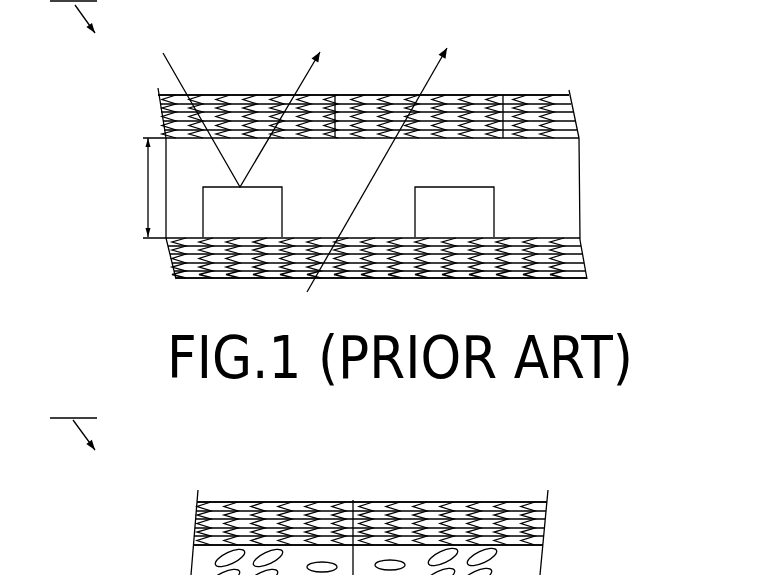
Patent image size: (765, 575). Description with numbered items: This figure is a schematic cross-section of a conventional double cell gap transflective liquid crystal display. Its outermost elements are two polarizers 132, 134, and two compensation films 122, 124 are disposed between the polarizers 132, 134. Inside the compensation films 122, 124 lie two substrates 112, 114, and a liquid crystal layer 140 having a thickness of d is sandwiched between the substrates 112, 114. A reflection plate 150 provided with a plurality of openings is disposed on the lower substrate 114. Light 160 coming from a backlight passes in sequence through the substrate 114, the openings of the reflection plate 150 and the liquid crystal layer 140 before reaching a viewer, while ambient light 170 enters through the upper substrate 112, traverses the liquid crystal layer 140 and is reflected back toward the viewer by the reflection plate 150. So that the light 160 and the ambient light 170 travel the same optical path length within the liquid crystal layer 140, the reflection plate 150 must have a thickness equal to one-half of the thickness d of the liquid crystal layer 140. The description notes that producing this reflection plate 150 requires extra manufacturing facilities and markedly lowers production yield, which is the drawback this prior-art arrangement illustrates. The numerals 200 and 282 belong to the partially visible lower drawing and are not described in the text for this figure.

In FIG. 1, the substrate 112 is at (580, 133).
In FIG. 2, the substrate 112 is at (543, 540).
In FIG. 1, the substrate 114 is at (580, 243).
In FIG. 1, the compensation film 122 is at (163, 120).
In FIG. 2, the compensation film 122 is at (187, 525).
In FIG. 1, the compensation film 124 is at (170, 263).
In FIG. 1, the polarizer 132 is at (577, 102).
In FIG. 2, the polarizer 132 is at (550, 510).
In FIG. 1, the polarizer 134 is at (586, 276).
In FIG. 1, the liquid crystal layer 140 is at (581, 192).
In FIG. 1, the reflection plate 150 is at (335, 95).
In FIG. 1, the light 160 is at (387, 158).
In FIG. 1, the ambient light 170 is at (249, 107).
In FIG. 1, the thickness of liquid crystal layer d is at (138, 187).
In FIG. 2, the display device 200 is at (73, 422).
In FIG. 2, the partition 282 is at (353, 500).